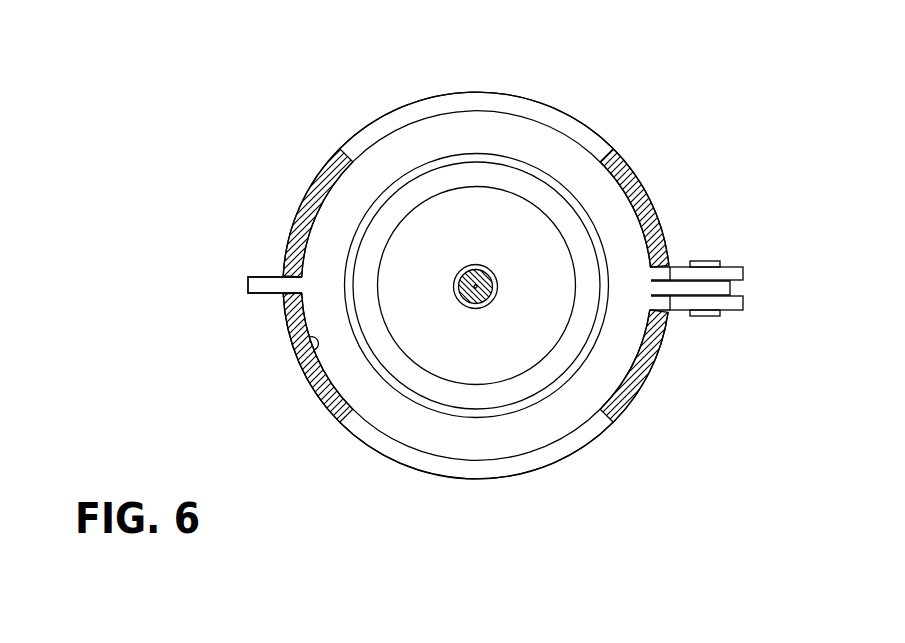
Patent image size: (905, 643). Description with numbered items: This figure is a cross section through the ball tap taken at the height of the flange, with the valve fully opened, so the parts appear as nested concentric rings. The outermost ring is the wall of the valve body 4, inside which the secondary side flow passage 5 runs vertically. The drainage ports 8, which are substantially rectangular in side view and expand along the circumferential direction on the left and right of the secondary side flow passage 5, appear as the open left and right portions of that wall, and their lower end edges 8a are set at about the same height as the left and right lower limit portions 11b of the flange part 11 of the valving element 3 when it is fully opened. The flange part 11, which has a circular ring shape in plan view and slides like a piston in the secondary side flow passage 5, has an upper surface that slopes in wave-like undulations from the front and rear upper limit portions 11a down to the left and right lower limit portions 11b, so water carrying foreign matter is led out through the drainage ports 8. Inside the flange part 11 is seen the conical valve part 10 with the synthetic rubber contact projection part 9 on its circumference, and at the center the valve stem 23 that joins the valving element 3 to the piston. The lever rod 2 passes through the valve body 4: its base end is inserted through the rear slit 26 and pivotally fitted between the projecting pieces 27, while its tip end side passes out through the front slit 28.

The lever rod 2 is at (275, 277).
The valving element 3 is at (408, 342).
The valve body 4 is at (305, 187).
The secondary side flow passage 5 is at (293, 345).
The drainage ports 8 is at (360, 132).
The lower end edges of the drainage ports 8a is at (560, 108).
The contact projection part 9 is at (577, 340).
The valve part 10 is at (588, 212).
The flange part 11 is at (603, 375).
The front and rear upper limit portions 11a is at (290, 320).
The left and right lower limit portions 11b is at (477, 132).
The valve stem 23 is at (458, 270).
The rear slit 26 is at (667, 250).
The projecting pieces 27 is at (743, 270).
The front slit 28 is at (283, 291).